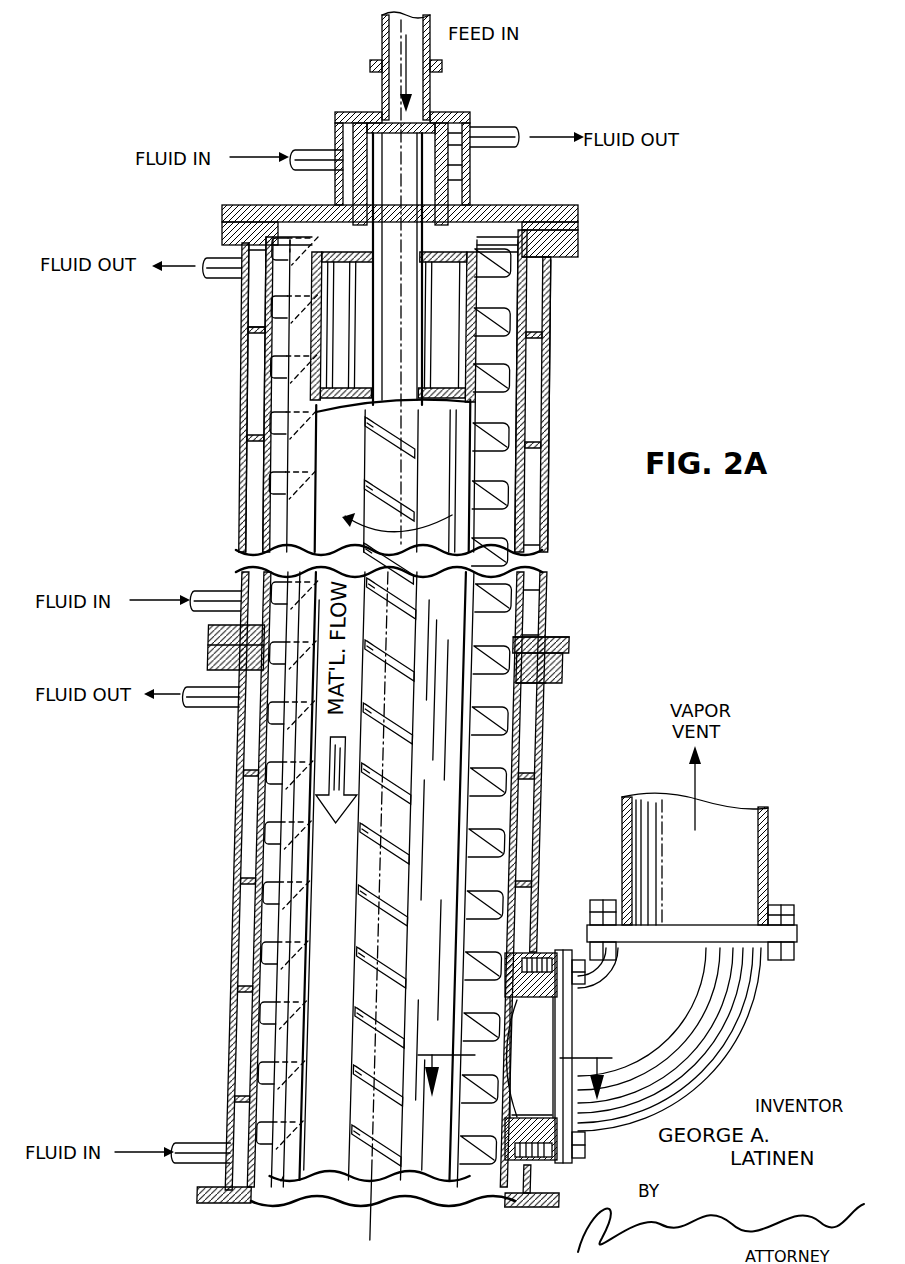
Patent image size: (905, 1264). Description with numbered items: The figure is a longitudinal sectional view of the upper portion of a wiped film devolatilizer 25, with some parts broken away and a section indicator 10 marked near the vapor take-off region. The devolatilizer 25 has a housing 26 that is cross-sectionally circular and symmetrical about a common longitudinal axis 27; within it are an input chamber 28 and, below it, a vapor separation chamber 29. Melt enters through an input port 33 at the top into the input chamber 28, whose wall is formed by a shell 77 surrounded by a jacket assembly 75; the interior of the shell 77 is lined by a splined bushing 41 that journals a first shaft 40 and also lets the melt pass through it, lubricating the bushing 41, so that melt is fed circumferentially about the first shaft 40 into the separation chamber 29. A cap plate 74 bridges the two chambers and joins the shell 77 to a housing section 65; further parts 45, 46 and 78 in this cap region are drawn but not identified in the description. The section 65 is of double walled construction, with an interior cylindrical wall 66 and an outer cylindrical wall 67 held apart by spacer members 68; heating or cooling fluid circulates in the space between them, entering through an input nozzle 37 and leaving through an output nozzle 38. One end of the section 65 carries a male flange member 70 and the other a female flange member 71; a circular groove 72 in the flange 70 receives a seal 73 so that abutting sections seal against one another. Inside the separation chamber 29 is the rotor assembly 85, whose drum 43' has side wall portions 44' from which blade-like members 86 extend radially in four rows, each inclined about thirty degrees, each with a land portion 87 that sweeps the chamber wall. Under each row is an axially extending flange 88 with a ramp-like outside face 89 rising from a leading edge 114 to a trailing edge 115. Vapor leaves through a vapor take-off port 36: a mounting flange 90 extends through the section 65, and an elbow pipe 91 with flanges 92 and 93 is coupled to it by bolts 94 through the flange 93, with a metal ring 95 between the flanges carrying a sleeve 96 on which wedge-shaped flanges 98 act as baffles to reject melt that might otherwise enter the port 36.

The section line 10 is at (520, 1064).
The wiped film devolatilizer 25 is at (203, 215).
The housing 26 is at (556, 392).
The longitudinal axis 27 is at (398, 351).
The input chamber 28 is at (328, 114).
The vapor separation chamber 29 is at (512, 467).
The input port 33 is at (385, 87).
The vapor take-off port 36 is at (545, 1042).
The input nozzle 37 is at (228, 590).
The output nozzle 38 is at (227, 270).
The first shaft 40 is at (388, 183).
The splined bushing 41 is at (447, 120).
The drum 43' is at (254, 377).
The side wall portions 44' is at (474, 308).
The bearing housing 45 is at (441, 263).
The top plate 46 is at (494, 236).
The housing section 65 is at (556, 510).
The interior cylindrical wall 66 is at (535, 536).
The outer cylindrical wall 67 is at (549, 605).
The spacer members 68 is at (260, 431).
The male flange member 70 is at (572, 246).
The female flange member 71 is at (575, 638).
The circular groove 72 is at (557, 260).
The seal 73 is at (550, 222).
The cap plate 74 is at (256, 207).
The jacket assembly 75 is at (464, 180).
The shell 77 is at (345, 135).
The bearing 78 is at (468, 250).
The rotor assembly 85 is at (335, 450).
The blade-like members 86 is at (280, 372).
The land portion 87 is at (382, 430).
The axially extending flange 88 is at (384, 1165).
The ramp-like outside face 89 is at (380, 920).
The mounting flange 90 is at (524, 958).
The elbow pipe 91 is at (720, 1002).
The flange 92 is at (703, 932).
The flange 93 is at (563, 1010).
The bolts 94 is at (576, 1157).
The ring 95 is at (542, 1162).
The sleeve 96 is at (540, 1118).
The wedge-shaped flanges 98 is at (508, 1064).
The leading edge 114 is at (464, 619).
The trailing edge 115 is at (302, 573).